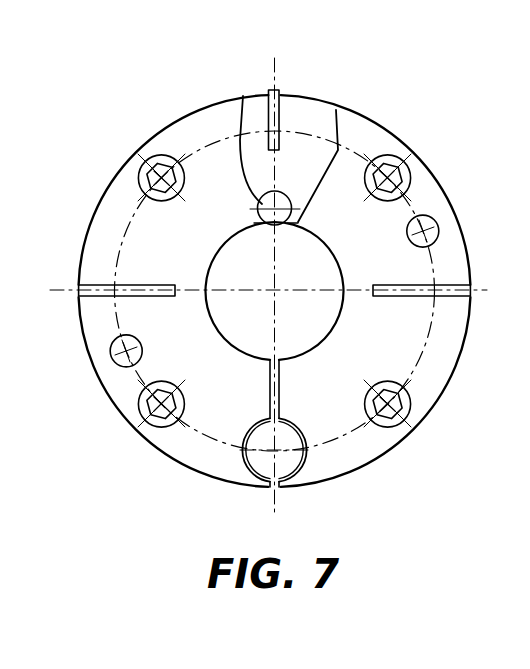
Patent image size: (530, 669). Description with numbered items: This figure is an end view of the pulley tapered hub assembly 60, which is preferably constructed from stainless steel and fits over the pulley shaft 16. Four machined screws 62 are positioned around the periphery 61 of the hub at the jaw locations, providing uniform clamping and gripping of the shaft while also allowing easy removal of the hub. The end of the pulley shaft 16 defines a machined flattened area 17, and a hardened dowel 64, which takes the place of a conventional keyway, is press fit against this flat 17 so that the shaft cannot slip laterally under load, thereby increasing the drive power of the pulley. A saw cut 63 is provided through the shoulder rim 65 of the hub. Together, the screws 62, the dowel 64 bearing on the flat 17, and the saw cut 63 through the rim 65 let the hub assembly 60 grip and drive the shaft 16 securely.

The pulley tapered hub assembly 60 is at (302, 54).
The periphery of the hub 61 is at (133, 210).
The pulley shaft 16 is at (215, 263).
The machined flattened area 17 is at (338, 125).
The machined screws 62 is at (150, 163).
The saw cut 63 is at (268, 90).
The hardened dowel 64 is at (243, 100).
The shoulder rim 65 is at (445, 348).